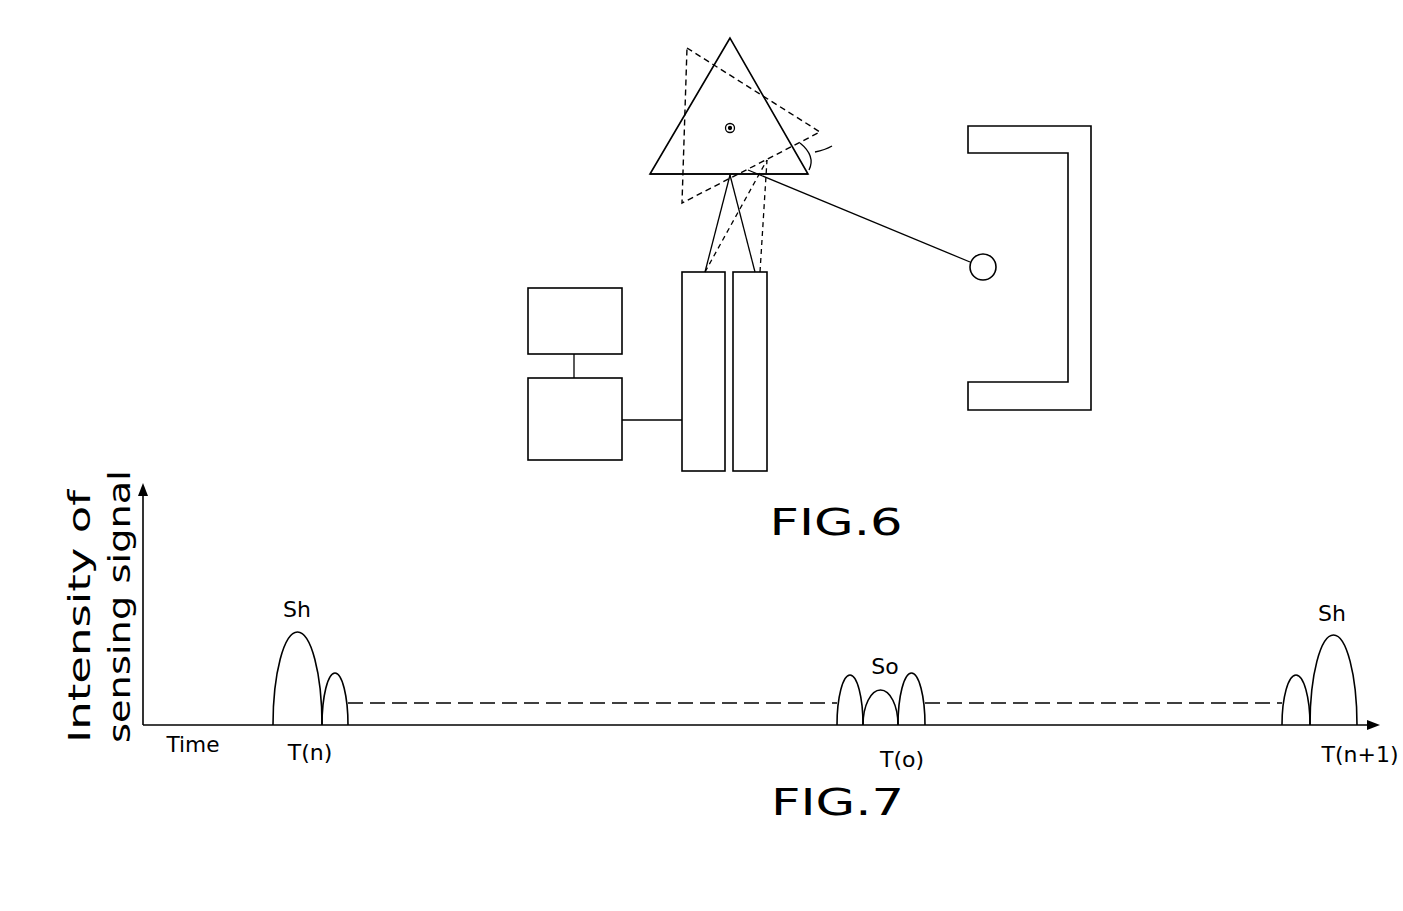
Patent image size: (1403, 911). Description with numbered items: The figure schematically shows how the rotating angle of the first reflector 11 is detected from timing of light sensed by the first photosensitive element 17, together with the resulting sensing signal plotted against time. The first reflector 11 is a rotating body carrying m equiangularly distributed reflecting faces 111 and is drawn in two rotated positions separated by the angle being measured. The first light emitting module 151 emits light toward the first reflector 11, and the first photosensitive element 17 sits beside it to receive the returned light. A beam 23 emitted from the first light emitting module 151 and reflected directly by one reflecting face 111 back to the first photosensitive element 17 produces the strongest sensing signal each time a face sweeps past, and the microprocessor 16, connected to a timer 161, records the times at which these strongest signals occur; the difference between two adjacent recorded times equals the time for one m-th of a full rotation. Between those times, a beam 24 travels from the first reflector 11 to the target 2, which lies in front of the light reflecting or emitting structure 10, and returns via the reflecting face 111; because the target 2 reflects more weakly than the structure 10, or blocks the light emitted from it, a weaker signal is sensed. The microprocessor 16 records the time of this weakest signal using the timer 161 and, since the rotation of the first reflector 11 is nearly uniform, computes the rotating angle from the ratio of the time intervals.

The target 2 is at (993, 262).
The light reflecting or emitting structure 10 is at (1078, 155).
The first reflector 11 is at (690, 195).
The reflecting face 111 is at (773, 170).
The microprocessor 16 is at (550, 429).
The timer 161 is at (548, 312).
The first photosensitive element 17 is at (693, 465).
The first light emitting module 151 is at (753, 352).
The beam 23 is at (723, 193).
The beam 24 is at (760, 208).